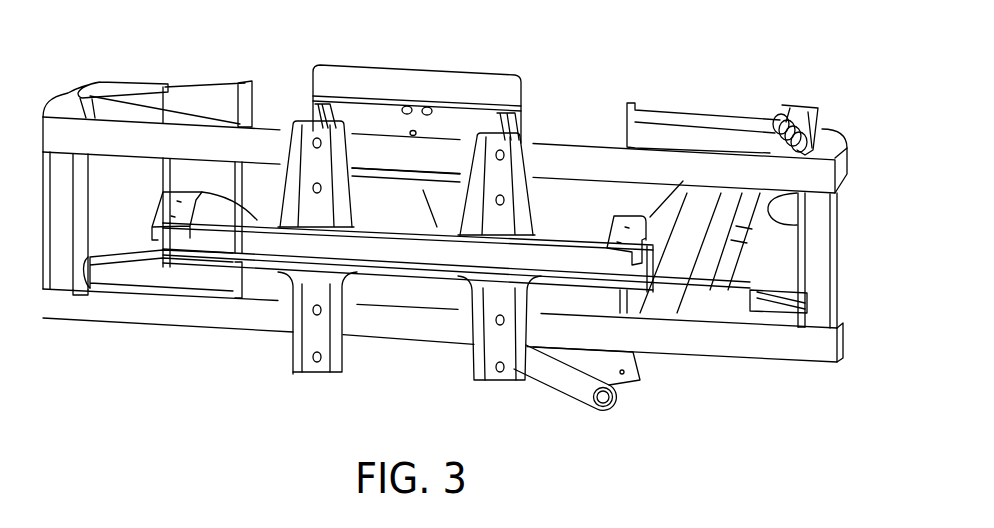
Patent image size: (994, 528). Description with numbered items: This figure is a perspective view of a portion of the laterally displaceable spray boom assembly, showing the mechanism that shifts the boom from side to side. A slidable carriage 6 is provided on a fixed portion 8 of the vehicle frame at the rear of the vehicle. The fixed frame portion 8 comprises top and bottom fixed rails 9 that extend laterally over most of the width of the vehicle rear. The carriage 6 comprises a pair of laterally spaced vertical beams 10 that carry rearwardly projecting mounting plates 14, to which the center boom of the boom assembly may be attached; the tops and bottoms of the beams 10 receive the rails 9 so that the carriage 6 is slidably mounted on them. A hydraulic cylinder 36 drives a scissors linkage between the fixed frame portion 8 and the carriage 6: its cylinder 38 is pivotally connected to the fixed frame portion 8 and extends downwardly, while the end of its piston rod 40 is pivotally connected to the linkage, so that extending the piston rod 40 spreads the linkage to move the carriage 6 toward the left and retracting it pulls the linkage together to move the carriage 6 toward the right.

The slidable carriage 6 is at (282, 371).
The fixed portion of the frame 8 is at (600, 138).
The fixed rails 9 is at (695, 162).
The vertical beams 10 is at (503, 170).
The mounting plates 14 is at (173, 207).
The hydraulic cylinder 36 is at (690, 223).
The cylinder 38 is at (670, 238).
The piston rod 40 is at (585, 300).